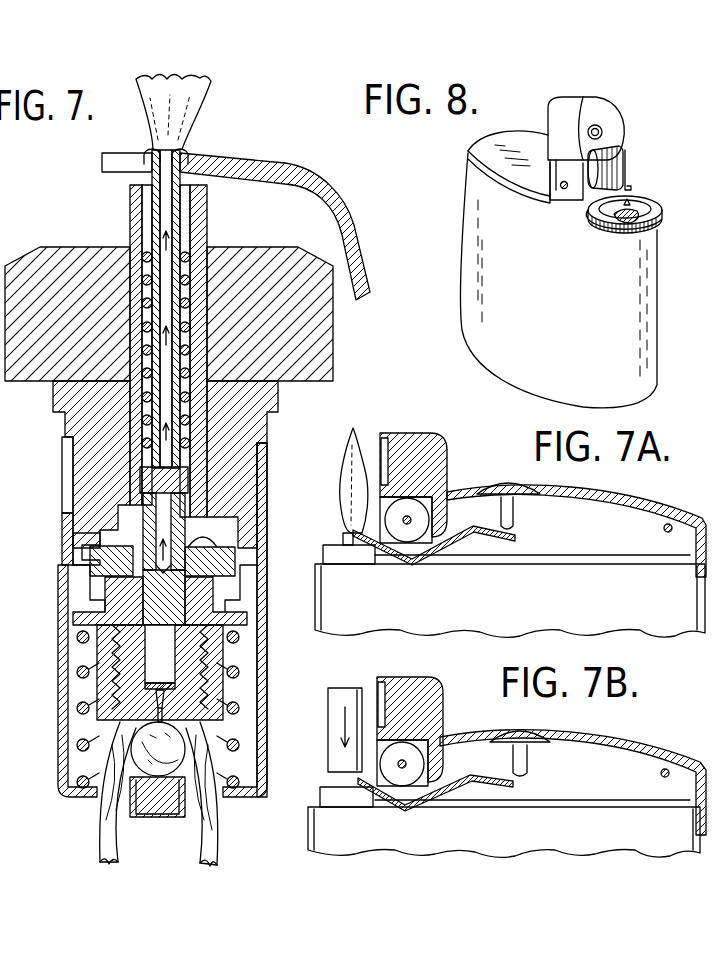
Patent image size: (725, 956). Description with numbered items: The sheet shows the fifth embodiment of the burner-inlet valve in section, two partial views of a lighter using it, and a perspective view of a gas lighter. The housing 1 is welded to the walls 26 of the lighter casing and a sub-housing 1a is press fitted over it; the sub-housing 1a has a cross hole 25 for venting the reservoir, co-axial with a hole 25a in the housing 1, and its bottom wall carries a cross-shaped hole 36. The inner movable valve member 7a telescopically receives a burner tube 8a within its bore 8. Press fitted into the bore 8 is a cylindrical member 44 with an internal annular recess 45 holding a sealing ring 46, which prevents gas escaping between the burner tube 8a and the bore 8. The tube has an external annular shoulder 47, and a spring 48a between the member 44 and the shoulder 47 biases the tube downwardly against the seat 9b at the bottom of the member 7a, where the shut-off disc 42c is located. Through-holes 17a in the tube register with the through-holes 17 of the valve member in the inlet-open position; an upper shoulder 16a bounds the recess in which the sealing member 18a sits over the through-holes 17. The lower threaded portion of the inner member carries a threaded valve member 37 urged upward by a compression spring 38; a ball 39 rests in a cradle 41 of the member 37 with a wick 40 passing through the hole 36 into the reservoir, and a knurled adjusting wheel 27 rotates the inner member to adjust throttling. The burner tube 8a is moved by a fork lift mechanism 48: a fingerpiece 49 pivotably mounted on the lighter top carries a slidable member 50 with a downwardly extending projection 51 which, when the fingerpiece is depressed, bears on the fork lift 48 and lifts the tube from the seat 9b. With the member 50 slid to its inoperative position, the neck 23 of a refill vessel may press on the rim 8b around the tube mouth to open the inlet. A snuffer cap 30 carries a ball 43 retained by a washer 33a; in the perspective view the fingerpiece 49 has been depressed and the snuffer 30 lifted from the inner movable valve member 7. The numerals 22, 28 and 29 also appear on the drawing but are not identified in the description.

In FIG. 7, the housing 1 is at (272, 416).
In FIG. 7, the sub-housing 1a is at (267, 520).
In FIG. 8, the inner movable valve member 7 is at (617, 222).
In FIG. 7, the inner movable valve member 7a is at (208, 206).
In FIG. 7, the axial bore 8 is at (148, 292).
In FIG. 7, the burner tube 8a is at (152, 356).
In FIG. 7A, the burner tube 8a is at (342, 537).
In FIG. 7, the rim 8b is at (194, 152).
In FIG. 7, the seat 9b is at (183, 718).
In FIG. 7, the upper shoulder 16a is at (115, 578).
In FIG. 7, the through-holes 17 is at (237, 563).
In FIG. 7, the through-holes 17a is at (197, 545).
In FIG. 7, the sealing member 18a is at (235, 582).
In FIG. 7, the flame 22 is at (207, 104).
In FIG. 7A, the flame 22 is at (358, 434).
In FIG. 7B, the neck of refill vessel 23 is at (330, 731).
In FIG. 7, the cross hole 25 is at (62, 523).
In FIG. 7, the hole 25a is at (75, 545).
In FIG. 8, the walls of lighter casing 26 is at (468, 208).
In FIG. 7, the adjusting wheel 27 is at (333, 338).
In FIG. 8, the adjusting wheel 27 is at (662, 212).
In FIG. 8, the pivot pin 28 is at (564, 190).
In FIG. 7A, the pivot pin 28 is at (412, 521).
In FIG. 7B, the pivot pin 28 is at (406, 765).
In FIG. 8, the wheel 29 is at (624, 165).
In FIG. 7A, the wheel 29 is at (408, 505).
In FIG. 7B, the wheel 29 is at (400, 750).
In FIG. 8, the snuffer cap 30 is at (597, 104).
In FIG. 7A, the snuffer cap 30 is at (448, 458).
In FIG. 7B, the snuffer cap 30 is at (444, 702).
In FIG. 8, the retaining washer 33a is at (602, 130).
In FIG. 7, the cross-shaped hole 36 is at (223, 800).
In FIG. 7, the threaded valve member 37 is at (92, 653).
In FIG. 7, the compression spring 38 is at (78, 708).
In FIG. 7, the ball 39 is at (180, 758).
In FIG. 7, the wick 40 is at (212, 845).
In FIG. 7, the cradle 41 is at (153, 820).
In FIG. 7, the shut-off disc 42c is at (175, 686).
In FIG. 8, the ball 43 is at (603, 134).
In FIG. 7, the cylindrical member 44 is at (131, 200).
In FIG. 7, the internal annular recess 45 is at (207, 243).
In FIG. 7, the sealing ring 46 is at (142, 240).
In FIG. 7, the external annular shoulder 47 is at (187, 480).
In FIG. 7, the fork lift mechanism 48 is at (283, 166).
In FIG. 7A, the fork lift mechanism 48 is at (405, 560).
In FIG. 7B, the fork lift mechanism 48 is at (453, 780).
In FIG. 7, the spring 48a is at (190, 306).
In FIG. 8, the fingerpiece 49 is at (522, 145).
In FIG. 7A, the fingerpiece 49 is at (625, 500).
In FIG. 7B, the fingerpiece 49 is at (628, 748).
In FIG. 7A, the slidable member 50 is at (503, 480).
In FIG. 7B, the slidable member 50 is at (528, 728).
In FIG. 7A, the projection 51 is at (514, 516).
In FIG. 7B, the projection 51 is at (528, 766).